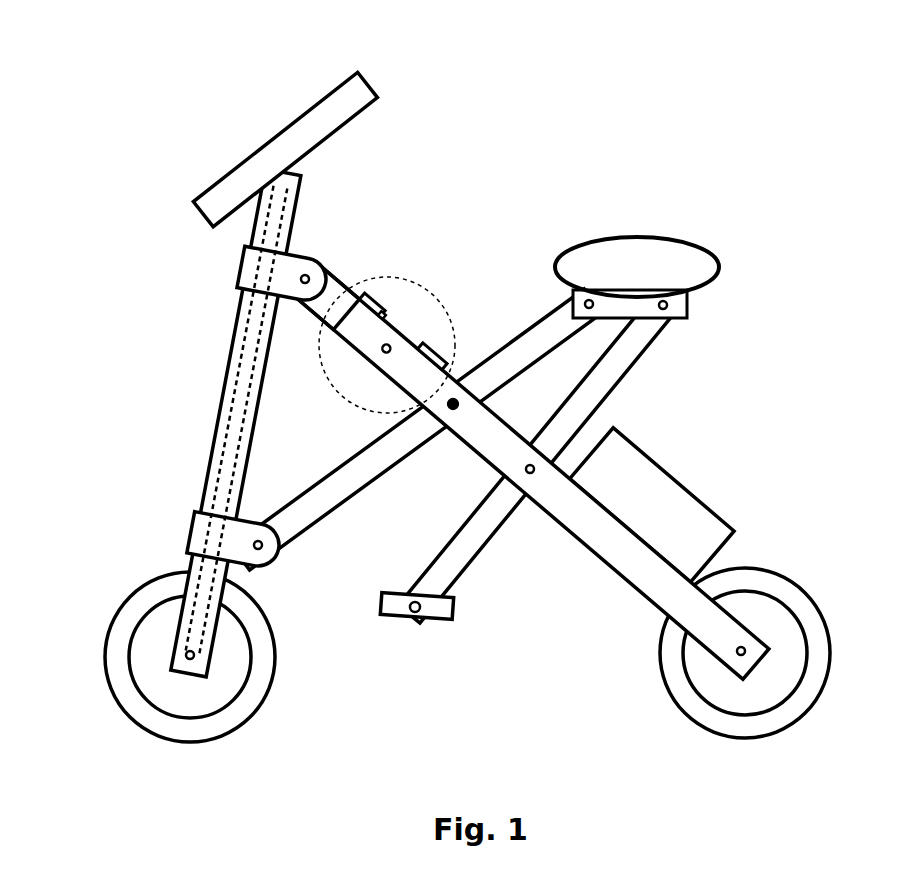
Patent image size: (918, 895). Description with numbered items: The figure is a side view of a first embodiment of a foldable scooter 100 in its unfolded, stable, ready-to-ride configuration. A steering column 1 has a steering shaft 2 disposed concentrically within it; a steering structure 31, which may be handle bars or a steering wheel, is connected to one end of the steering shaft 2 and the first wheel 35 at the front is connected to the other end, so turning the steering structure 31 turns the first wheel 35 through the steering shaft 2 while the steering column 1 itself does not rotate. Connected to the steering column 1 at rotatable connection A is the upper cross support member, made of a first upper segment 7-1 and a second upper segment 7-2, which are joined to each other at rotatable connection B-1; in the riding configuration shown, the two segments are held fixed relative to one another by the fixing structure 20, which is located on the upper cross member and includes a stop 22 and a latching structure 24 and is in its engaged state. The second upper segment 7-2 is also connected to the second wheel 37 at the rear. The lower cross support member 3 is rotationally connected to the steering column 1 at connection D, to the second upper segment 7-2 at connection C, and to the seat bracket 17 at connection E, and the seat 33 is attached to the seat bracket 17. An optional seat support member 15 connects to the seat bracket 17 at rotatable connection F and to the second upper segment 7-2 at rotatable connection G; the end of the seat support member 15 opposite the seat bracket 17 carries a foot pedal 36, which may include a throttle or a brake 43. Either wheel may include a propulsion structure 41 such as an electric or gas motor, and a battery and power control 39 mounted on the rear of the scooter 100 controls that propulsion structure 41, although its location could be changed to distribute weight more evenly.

The scooter 100 is at (175, 62).
The steering column 1 is at (228, 445).
The steering shaft 2 is at (236, 384).
The lower cross support member 3 is at (360, 475).
The first upper segment 7-1 is at (328, 294).
The second upper segment 7-2 is at (478, 430).
The seat support member 15 is at (615, 365).
The seat bracket 17 is at (640, 308).
The fixing structure 20 is at (450, 307).
The stop 22 is at (437, 363).
The latching structure 24 is at (377, 293).
The steering structure 31 is at (290, 172).
The seat 33 is at (651, 261).
The first wheel 35 is at (148, 642).
The foot pedals 36 is at (430, 613).
The second wheel 37 is at (745, 612).
The battery and power control 39 is at (655, 493).
The propulsion structure 41 is at (124, 685).
The brake 43 is at (173, 682).
The rotatable connection A is at (305, 276).
The rotatable connection B-1 is at (383, 349).
The rotatable connection C is at (452, 410).
The rotatable connection D is at (242, 540).
The rotatable connection E is at (584, 303).
The rotatable connection F is at (668, 305).
The rotatable connection G is at (532, 474).